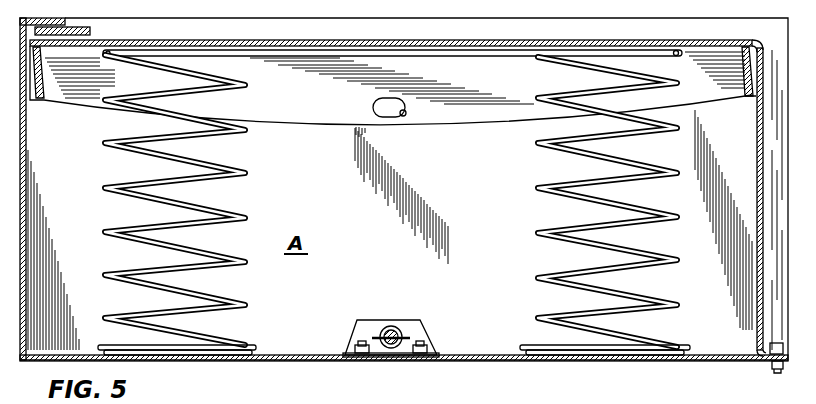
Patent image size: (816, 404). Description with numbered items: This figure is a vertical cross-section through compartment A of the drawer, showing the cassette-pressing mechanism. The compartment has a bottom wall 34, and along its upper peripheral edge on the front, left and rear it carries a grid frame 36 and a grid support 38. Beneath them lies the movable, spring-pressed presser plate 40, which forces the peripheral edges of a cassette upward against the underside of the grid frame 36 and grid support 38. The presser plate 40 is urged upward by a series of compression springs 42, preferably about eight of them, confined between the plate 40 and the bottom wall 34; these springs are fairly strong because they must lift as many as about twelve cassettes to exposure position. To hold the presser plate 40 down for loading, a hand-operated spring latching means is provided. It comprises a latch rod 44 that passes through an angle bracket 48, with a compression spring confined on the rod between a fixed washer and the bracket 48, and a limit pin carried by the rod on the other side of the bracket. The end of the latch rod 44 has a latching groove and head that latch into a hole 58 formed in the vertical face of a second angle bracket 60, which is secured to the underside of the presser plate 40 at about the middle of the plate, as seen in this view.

The bottom wall 34 is at (272, 361).
The grid frame 36 is at (55, 46).
The grid support 38 is at (92, 31).
The presser plate 40 is at (508, 47).
The compression springs 42 is at (248, 177).
The latch rod 44 is at (399, 332).
The angle bracket 48 is at (390, 321).
The hole 58 is at (406, 113).
The angle bracket 60 is at (487, 115).